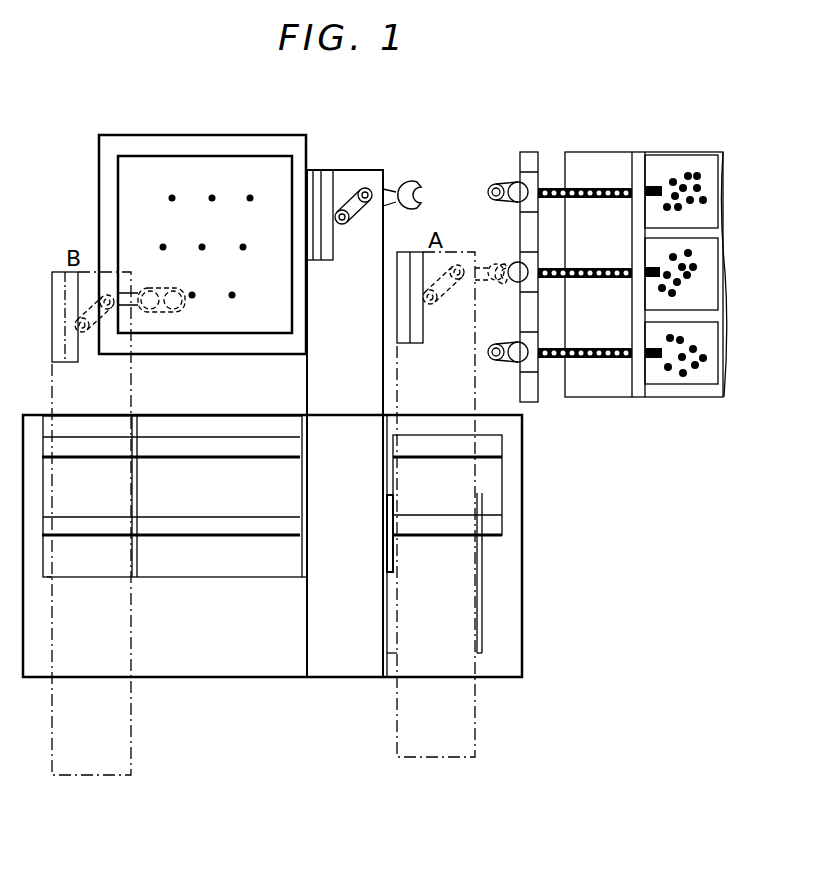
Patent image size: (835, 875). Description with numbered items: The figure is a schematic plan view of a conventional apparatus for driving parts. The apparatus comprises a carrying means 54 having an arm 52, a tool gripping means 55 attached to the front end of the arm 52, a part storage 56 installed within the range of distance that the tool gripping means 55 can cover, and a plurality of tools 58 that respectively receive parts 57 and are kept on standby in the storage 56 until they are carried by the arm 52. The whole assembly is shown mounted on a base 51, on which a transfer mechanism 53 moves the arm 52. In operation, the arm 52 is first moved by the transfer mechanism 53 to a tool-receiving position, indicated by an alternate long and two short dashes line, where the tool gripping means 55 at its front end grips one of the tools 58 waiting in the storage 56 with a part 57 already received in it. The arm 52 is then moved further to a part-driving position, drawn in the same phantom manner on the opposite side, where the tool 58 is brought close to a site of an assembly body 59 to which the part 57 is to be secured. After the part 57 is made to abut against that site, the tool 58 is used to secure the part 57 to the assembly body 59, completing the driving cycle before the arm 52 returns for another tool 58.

The base 51 is at (522, 465).
The arm 52 is at (131, 366).
The transfer mechanism 53 is at (197, 537).
The carrying means 54 is at (222, 416).
The tool gripping means 55 is at (408, 182).
The part storage 56 is at (597, 152).
The parts 57 is at (172, 198).
The tools 58 is at (510, 182).
The assembly body 59 is at (240, 156).